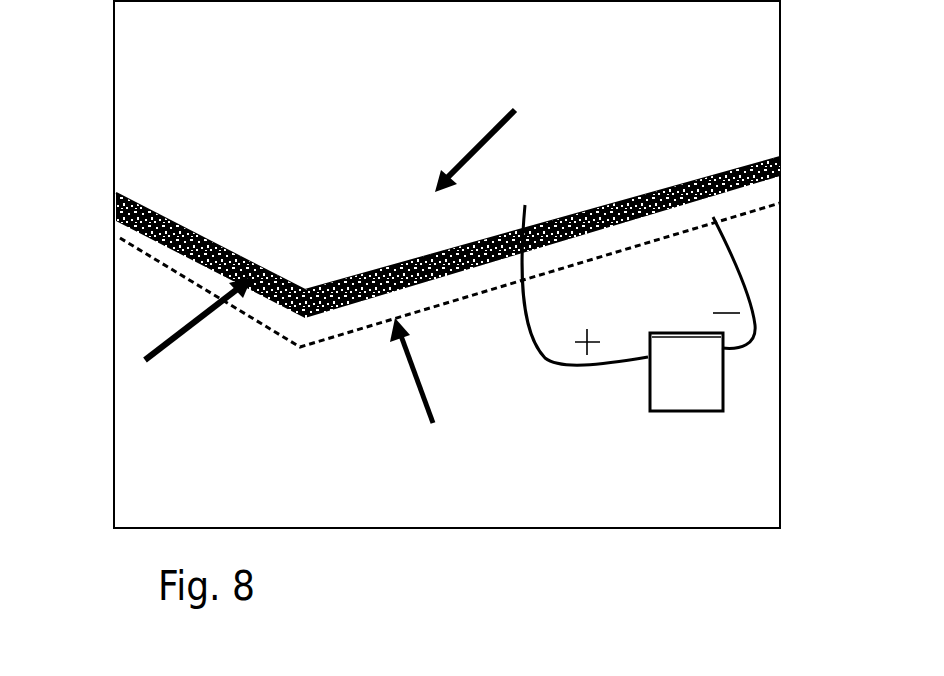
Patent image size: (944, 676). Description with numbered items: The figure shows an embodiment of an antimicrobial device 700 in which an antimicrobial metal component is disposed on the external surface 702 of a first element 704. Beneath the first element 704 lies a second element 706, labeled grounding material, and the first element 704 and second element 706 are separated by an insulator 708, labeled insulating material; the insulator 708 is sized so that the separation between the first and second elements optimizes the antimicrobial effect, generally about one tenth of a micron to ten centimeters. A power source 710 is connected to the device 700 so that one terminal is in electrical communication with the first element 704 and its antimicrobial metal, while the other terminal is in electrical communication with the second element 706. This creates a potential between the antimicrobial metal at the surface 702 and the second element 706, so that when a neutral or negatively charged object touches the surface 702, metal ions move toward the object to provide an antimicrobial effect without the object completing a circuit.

The antimicrobial device 700 is at (90, 180).
The external surface 702 is at (763, 122).
The first element 704 is at (780, 160).
The second element 706 is at (450, 336).
The insulator 708 is at (448, 288).
The power source 710 is at (686, 372).